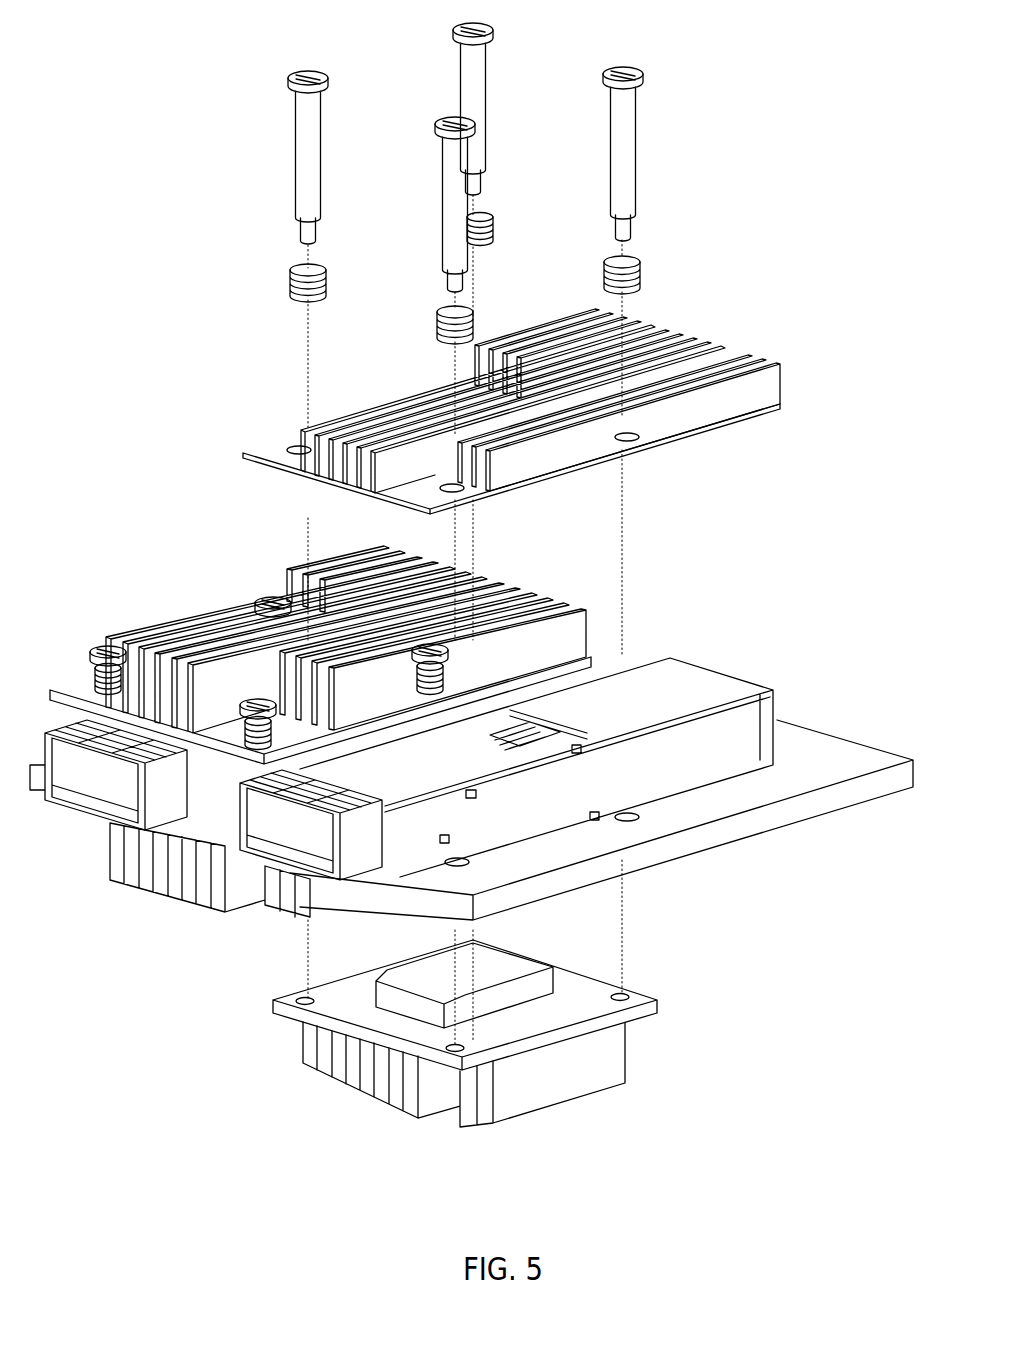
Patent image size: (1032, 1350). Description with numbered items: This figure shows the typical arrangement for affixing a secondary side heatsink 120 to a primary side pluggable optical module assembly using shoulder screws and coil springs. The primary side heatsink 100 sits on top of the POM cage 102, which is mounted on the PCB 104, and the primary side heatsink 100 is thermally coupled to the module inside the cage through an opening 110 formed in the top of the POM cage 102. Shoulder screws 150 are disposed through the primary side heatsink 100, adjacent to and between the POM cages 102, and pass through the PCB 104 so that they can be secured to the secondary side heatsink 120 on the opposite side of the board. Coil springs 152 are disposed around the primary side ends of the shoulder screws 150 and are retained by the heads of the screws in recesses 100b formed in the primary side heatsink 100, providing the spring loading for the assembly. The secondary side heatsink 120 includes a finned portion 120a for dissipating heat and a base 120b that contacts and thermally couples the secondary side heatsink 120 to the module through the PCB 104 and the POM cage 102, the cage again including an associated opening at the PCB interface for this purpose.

The shoulder screws 150 is at (640, 155).
The coil springs 152 is at (645, 272).
The primary side heatsink 100 is at (490, 387).
The recesses 100b is at (422, 458).
The opening 110 is at (407, 768).
The POM cage 102 is at (690, 656).
The PCB 104 is at (690, 848).
The secondary side heatsink 120 is at (464, 1054).
The finned portion 120a is at (298, 1084).
The base 120b is at (368, 998).